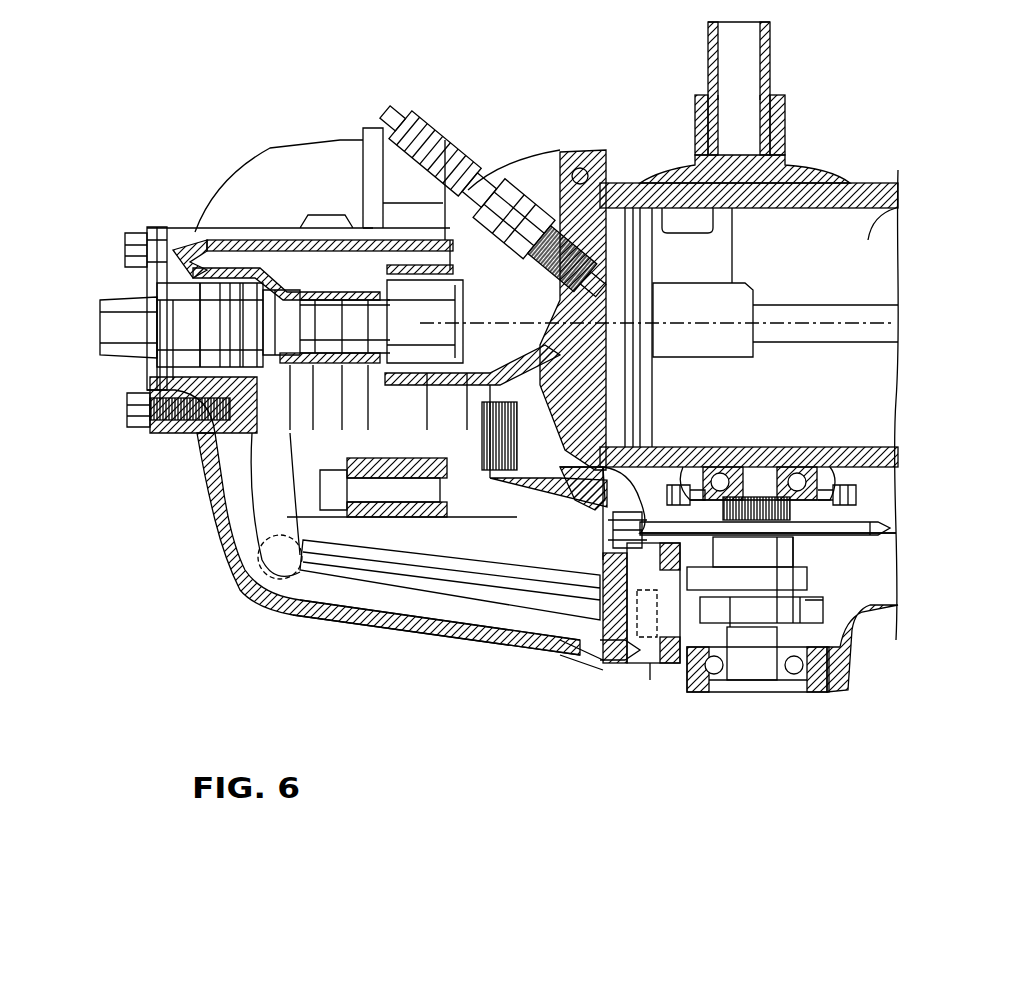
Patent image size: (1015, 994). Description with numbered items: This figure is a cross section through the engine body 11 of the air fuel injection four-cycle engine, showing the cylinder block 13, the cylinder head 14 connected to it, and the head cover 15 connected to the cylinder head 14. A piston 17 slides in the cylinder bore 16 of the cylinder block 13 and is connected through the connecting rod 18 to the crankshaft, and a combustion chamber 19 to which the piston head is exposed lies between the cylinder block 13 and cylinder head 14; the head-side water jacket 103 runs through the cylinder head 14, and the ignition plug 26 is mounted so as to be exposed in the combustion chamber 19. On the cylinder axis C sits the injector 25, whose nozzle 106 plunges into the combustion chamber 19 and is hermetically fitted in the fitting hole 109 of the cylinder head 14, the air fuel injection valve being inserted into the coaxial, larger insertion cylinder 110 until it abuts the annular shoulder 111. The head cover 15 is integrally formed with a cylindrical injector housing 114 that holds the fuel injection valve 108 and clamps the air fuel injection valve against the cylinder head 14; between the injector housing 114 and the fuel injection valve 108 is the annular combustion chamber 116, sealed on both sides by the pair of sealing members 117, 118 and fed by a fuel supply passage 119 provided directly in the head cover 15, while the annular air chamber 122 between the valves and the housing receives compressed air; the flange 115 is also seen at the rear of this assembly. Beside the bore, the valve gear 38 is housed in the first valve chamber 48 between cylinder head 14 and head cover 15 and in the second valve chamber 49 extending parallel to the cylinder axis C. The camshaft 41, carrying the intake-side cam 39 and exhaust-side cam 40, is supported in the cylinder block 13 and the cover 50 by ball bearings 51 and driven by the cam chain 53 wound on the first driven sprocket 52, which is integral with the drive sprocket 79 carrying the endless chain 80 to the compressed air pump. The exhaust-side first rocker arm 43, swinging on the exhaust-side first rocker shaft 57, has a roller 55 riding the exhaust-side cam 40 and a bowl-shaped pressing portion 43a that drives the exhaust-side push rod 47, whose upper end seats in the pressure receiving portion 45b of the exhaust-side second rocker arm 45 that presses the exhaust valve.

The engine body 11 is at (867, 178).
The cylinder block 13 is at (820, 183).
The cylinder head 14 is at (537, 157).
The head cover 15 is at (257, 177).
The cylinder bore 16 is at (870, 212).
The piston 17 is at (752, 297).
The connecting rod 18 is at (798, 305).
The combustion chamber 19 is at (703, 447).
The injector 25 is at (333, 305).
The ignition plug 26 is at (393, 127).
The valve gear 38 is at (515, 625).
The intake-side cam 39 is at (825, 610).
The exhaust-side cam 40 is at (896, 612).
The camshaft 41 is at (807, 570).
The exhaust-side first rocker arm 43 is at (572, 630).
The pressing portion 43a is at (622, 645).
The exhaust-side second rocker arm 45 is at (257, 507).
The pressure receiving portion 45b is at (382, 639).
The exhaust-side push rod 47 is at (347, 568).
The first valve chamber 48 is at (228, 478).
The second valve chamber 49 is at (882, 478).
The cover 50 is at (777, 692).
The ball bearing 51 is at (785, 465).
The first driven sprocket 52 is at (900, 528).
The cam chain 53 is at (650, 447).
The roller 55 is at (722, 600).
The exhaust-side first rocker shaft 57 is at (640, 665).
The drive sprocket 79 is at (815, 460).
The endless chain 80 is at (858, 496).
The head-side water jacket 103 is at (643, 170).
The nozzle 106 is at (650, 312).
The fuel injection valve 108 is at (177, 338).
The fitting hole 109 is at (462, 338).
The insertion cylinder 110 is at (400, 267).
The annular shoulder 111 is at (463, 162).
The injector housing 114 is at (232, 267).
The flange plate 115 is at (147, 288).
The annular combustion chamber 116 is at (197, 437).
The sealing member 117 is at (182, 253).
The sealing member 118 is at (303, 307).
The fuel supply passage 119 is at (230, 336).
The annular air chamber 122 is at (318, 403).
The cylinder axis C is at (823, 293).